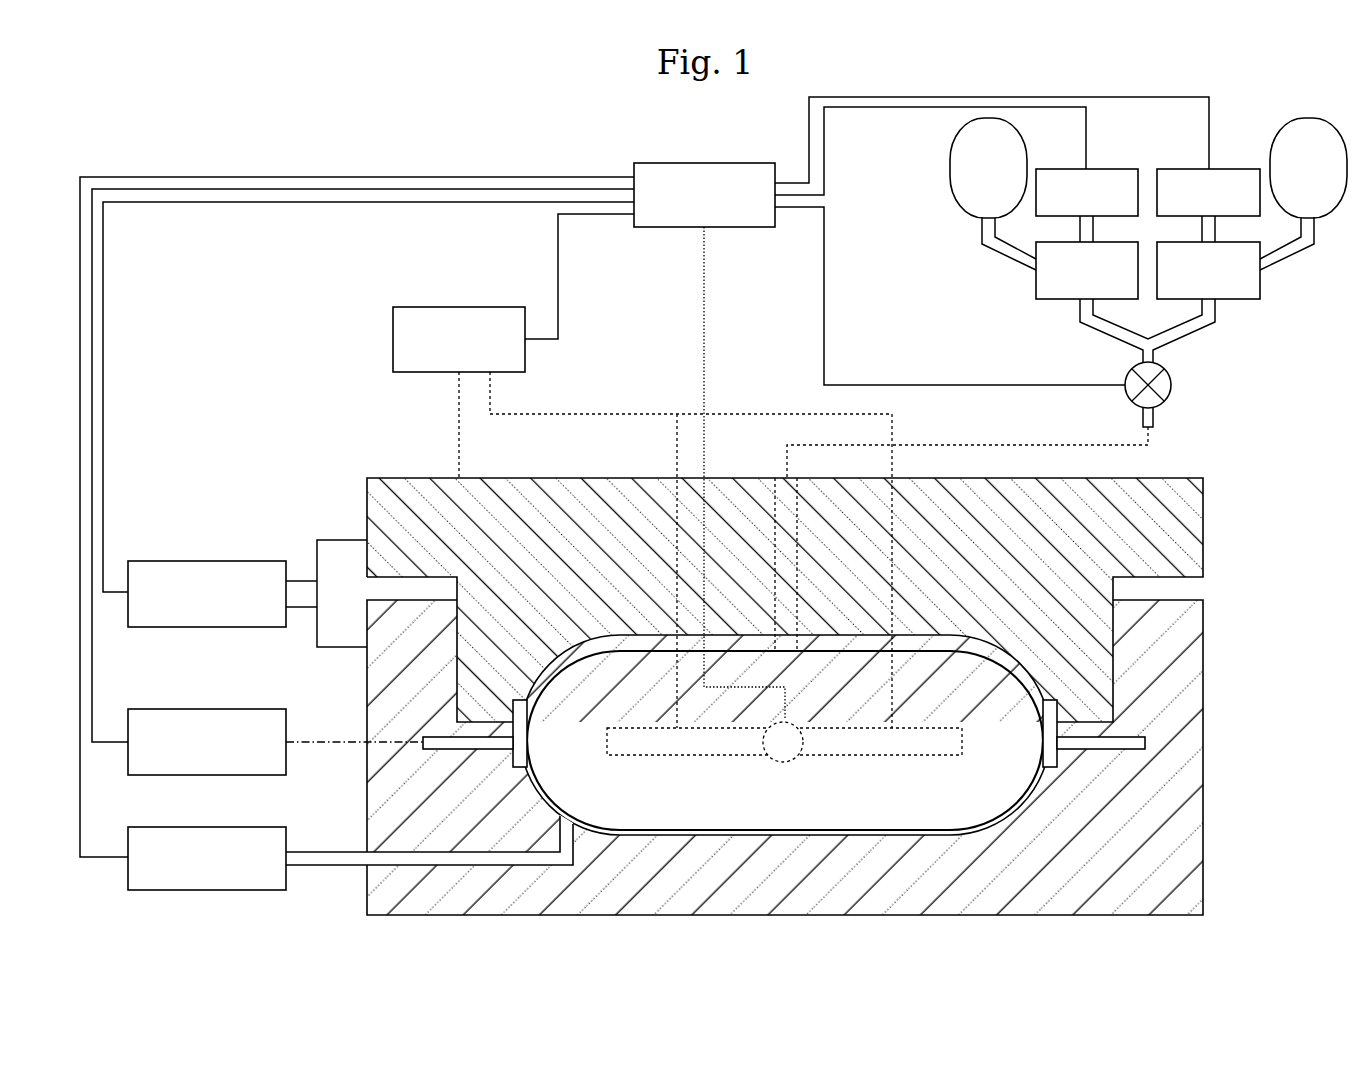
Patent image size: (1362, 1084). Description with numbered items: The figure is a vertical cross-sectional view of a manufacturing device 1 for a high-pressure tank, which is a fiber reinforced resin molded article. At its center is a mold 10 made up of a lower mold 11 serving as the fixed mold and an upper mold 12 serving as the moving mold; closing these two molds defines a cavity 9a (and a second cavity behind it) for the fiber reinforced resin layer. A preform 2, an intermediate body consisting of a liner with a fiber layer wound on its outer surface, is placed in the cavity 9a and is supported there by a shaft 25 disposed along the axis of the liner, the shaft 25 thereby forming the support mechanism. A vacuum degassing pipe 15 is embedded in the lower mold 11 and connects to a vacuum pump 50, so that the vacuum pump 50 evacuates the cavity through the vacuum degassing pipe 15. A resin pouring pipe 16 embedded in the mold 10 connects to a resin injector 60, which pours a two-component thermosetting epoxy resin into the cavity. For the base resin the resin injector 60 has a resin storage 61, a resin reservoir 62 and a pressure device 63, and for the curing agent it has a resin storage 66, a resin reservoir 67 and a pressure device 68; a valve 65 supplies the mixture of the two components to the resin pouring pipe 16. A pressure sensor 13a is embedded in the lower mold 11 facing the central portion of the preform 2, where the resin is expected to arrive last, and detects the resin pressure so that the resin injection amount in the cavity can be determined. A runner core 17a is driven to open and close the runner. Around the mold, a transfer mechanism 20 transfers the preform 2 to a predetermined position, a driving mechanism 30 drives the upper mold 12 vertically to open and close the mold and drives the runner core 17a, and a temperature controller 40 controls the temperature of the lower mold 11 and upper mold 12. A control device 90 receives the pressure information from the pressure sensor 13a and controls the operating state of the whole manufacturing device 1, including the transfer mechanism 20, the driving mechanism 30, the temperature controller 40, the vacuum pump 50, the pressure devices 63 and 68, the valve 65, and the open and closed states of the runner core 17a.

The manufacturing device 1 is at (232, 160).
The preform 2 is at (997, 795).
The cavity 9a is at (865, 832).
The mold 10 is at (802, 698).
The lower mold 11 is at (1187, 660).
The upper mold 12 is at (1190, 528).
The pressure sensor 13a is at (768, 758).
The vacuum degassing pipe 15 is at (487, 858).
The resin pouring pipe 16 is at (773, 512).
The runner core 17a is at (617, 726).
The transfer mechanism 20 is at (185, 708).
The shaft 25 is at (1127, 744).
The driving mechanism 30 is at (436, 306).
The temperature controller 40 is at (185, 560).
The vacuum pump 50 is at (185, 826).
The resin injector 60 is at (1149, 270).
The resin storage 61 is at (963, 215).
The resin reservoir 62 is at (1053, 302).
The pressure device 63 is at (1062, 168).
The valve 65 is at (1173, 385).
The resin storage 66 is at (1333, 215).
The resin reservoir 67 is at (1242, 302).
The pressure device 68 is at (1232, 168).
The control device 90 is at (668, 162).